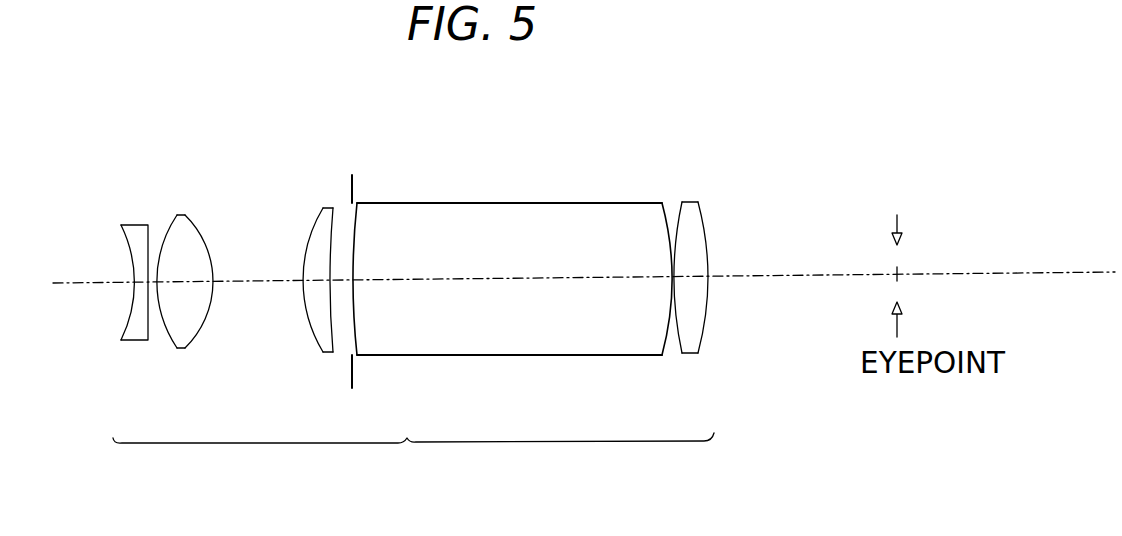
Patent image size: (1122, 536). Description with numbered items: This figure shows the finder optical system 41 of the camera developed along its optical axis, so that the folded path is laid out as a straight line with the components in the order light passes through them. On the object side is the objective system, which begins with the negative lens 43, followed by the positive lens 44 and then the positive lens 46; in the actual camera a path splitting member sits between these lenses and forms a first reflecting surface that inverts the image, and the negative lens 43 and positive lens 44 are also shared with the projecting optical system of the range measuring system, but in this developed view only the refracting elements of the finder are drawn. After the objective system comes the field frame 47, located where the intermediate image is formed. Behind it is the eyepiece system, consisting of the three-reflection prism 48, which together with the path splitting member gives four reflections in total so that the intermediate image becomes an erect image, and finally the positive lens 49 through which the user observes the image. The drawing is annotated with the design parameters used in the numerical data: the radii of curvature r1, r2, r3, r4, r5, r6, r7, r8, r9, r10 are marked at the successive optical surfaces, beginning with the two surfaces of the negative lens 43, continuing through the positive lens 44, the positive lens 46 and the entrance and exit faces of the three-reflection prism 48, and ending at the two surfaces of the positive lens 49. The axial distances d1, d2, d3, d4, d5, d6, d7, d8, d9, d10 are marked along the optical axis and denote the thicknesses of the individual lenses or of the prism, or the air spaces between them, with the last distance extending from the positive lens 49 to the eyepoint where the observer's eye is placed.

The finder optical system 41 is at (413, 456).
The negative lens 43 is at (105, 253).
The positive lens 44 is at (201, 253).
The positive lens 46 is at (304, 256).
The field frame 47 is at (352, 175).
The three-reflection prism 48 is at (512, 280).
The positive lens 49 is at (709, 265).
The radius of curvature r1 is at (121, 238).
The radius of curvature r2 is at (134, 233).
The radius of curvature r3 is at (165, 232).
The radius of curvature r4 is at (202, 228).
The radius of curvature r5 is at (318, 221).
The radius of curvature r6 is at (333, 256).
The radius of curvature r7 is at (357, 237).
The radius of curvature r8 is at (665, 212).
The radius of curvature r9 is at (677, 222).
The radius of curvature r10 is at (702, 220).
The thickness or space d1 is at (137, 288).
The thickness or space d2 is at (153, 287).
The thickness or space d3 is at (183, 283).
The thickness or space d4 is at (263, 285).
The thickness or space d5 is at (318, 283).
The thickness or space d6 is at (347, 287).
The thickness or space d7 is at (510, 280).
The thickness or space d8 is at (672, 278).
The thickness or space d9 is at (690, 277).
The thickness or space d10 is at (802, 276).